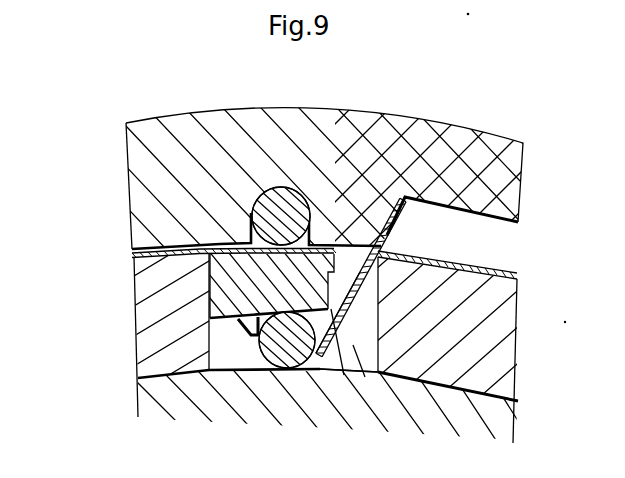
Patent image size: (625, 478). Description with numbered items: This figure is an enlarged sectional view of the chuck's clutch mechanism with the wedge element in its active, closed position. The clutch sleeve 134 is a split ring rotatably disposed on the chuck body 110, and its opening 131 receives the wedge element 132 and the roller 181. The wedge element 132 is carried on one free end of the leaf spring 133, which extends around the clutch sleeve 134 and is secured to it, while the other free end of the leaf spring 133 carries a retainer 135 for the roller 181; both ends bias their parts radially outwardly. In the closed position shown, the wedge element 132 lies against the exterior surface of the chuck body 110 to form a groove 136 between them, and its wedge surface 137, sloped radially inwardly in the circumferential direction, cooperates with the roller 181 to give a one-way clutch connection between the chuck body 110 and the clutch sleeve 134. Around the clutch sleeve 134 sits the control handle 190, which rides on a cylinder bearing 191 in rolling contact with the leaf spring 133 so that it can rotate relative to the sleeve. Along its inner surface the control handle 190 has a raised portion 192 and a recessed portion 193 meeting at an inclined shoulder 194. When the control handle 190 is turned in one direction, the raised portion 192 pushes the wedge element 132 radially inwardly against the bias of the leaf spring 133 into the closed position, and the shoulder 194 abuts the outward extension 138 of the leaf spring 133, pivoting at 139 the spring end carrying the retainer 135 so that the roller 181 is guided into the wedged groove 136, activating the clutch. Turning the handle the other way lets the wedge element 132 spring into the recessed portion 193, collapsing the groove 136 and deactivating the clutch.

The chuck body 110 is at (480, 410).
The opening 131 is at (363, 370).
The wedge element 132 is at (223, 282).
The leaf spring 133 is at (165, 255).
The clutch sleeve 134 is at (480, 340).
The retainer 135 is at (355, 350).
The groove 136 is at (233, 350).
The wedge surface 137 is at (236, 330).
The outward extension 138 is at (422, 195).
The pivot 139 is at (382, 249).
The roller 181 is at (286, 355).
The control handle 190 is at (301, 108).
The cylinder bearing 191 is at (273, 203).
The raised portion 192 is at (350, 227).
The recessed portion 193 is at (445, 228).
The inclined shoulder 194 is at (383, 238).